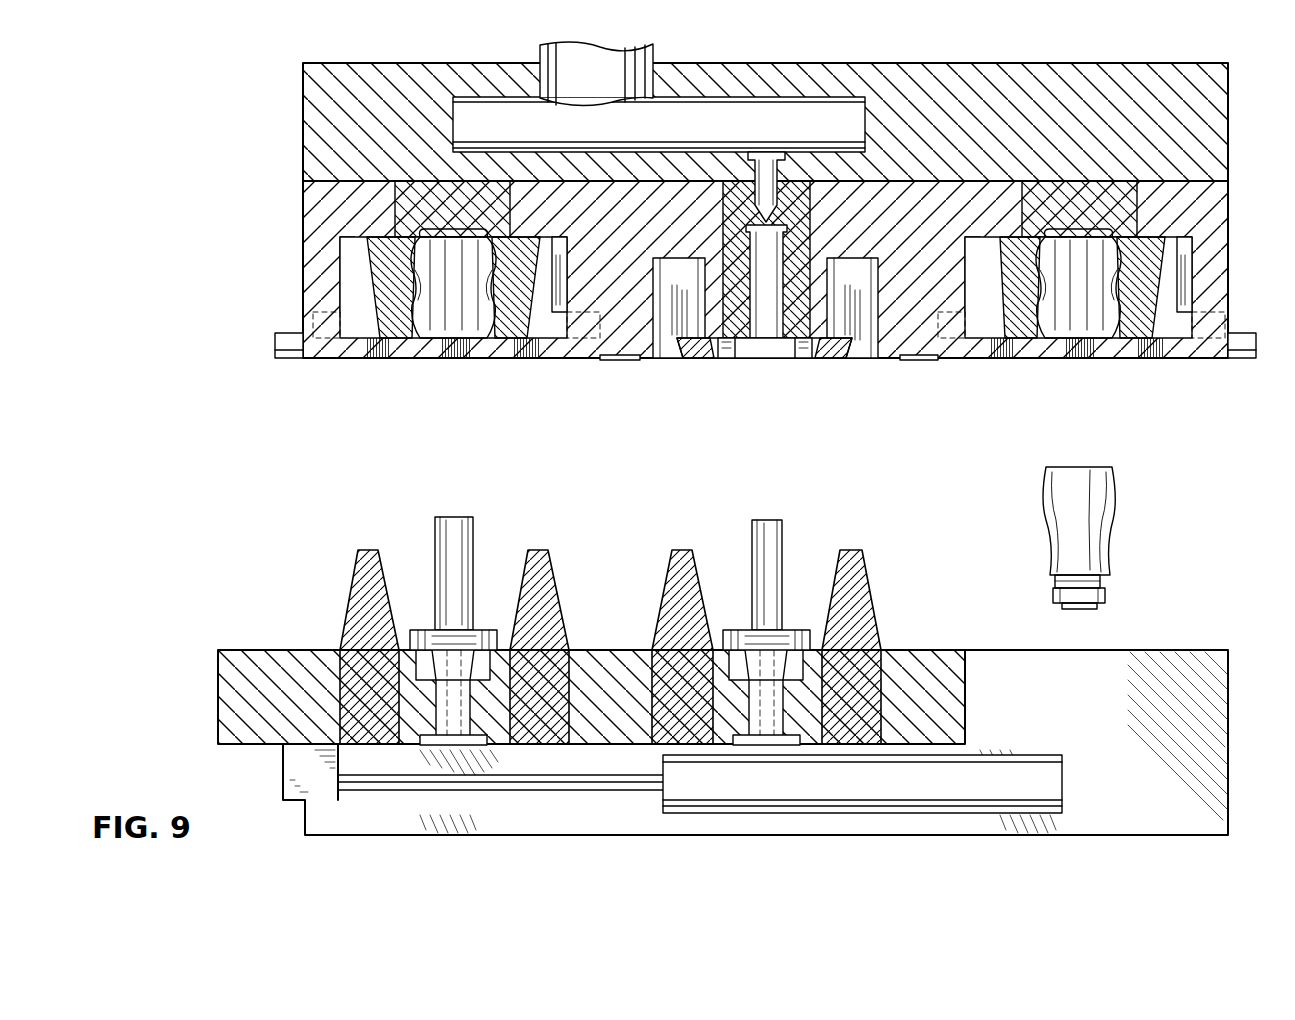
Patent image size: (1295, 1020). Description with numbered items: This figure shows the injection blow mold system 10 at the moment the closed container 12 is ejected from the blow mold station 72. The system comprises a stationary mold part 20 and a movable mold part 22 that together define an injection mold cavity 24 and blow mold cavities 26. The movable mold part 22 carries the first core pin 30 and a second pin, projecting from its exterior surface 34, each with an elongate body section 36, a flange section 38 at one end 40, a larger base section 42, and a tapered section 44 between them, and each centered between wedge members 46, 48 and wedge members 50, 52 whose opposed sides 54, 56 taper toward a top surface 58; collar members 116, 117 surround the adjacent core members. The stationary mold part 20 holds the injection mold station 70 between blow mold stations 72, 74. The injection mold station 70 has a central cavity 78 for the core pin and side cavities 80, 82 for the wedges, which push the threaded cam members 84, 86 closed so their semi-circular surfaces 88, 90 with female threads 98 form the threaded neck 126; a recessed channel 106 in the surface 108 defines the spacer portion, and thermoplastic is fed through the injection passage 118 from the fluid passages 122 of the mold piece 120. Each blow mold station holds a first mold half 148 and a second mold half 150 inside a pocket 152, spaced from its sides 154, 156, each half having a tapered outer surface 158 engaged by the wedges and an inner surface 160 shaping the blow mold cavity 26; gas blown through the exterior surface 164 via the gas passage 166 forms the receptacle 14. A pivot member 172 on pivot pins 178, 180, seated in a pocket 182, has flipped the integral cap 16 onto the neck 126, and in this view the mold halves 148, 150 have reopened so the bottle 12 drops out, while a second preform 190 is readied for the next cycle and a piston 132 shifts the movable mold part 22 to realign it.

The injection blow mold system 10 is at (241, 77).
The container 12 is at (1081, 538).
The receptacle 14 is at (1045, 490).
The integral cap 16 is at (1105, 597).
The stationary mold part 20 is at (766, 263).
The movable mold part 22 is at (1237, 694).
The injection mold cavity 24 is at (740, 350).
The blow mold cavity 26 is at (453, 348).
The first elongated core pin 30 is at (791, 515).
The exterior surface 34 is at (945, 650).
The elongate body section 36 is at (782, 600).
The flange section 38 is at (752, 638).
The end of the body section 40 is at (782, 632).
The base section 42 is at (500, 720).
The tapered section 44 is at (425, 680).
The wedge member 46 is at (869, 544).
The wedge member 48 is at (670, 540).
The wedge member 50 is at (558, 544).
The wedge member 52 is at (356, 540).
The tapered side 54 is at (378, 553).
The opposed side 56 is at (350, 590).
The top surface 58 is at (368, 549).
The injection mold station 70 is at (745, 172).
The blow mold station 72 is at (1080, 168).
The blow mold station 74 is at (445, 170).
The central cavity 78 is at (760, 215).
The side cavity 80 is at (870, 362).
The side cavity 82 is at (658, 360).
The threaded cam member 84 is at (840, 365).
The threaded cam member 86 is at (722, 360).
The semi-circular surface 88 is at (808, 360).
The semi-circular surface 90 is at (728, 358).
The female threads 98 is at (735, 350).
The recessed channel 106 is at (771, 348).
The surface of the stationary mold part 108 is at (776, 350).
The collar member 116 is at (810, 640).
The collar member 117 is at (495, 640).
The injection passage 118 is at (782, 160).
The mold piece 120 is at (1228, 100).
The fluid passage 122 is at (653, 60).
The threaded neck 126 is at (1055, 581).
The piston 132 is at (1062, 780).
The first mold half 148 is at (490, 345).
The second mold half 150 is at (400, 345).
The pocket 152 is at (590, 110).
The side of the pocket 154 is at (527, 345).
The side of the pocket 156 is at (350, 300).
The tapered outer surface 158 is at (545, 142).
The inner surface 160 is at (410, 360).
The exterior surface of the core pin 164 is at (752, 592).
The gas passage 166 is at (758, 555).
The pivot member 172 is at (548, 345).
The pivot pin 178 is at (620, 360).
The pivot pin 180 is at (290, 360).
The pocket 182 is at (340, 360).
The second preform 190 is at (480, 514).